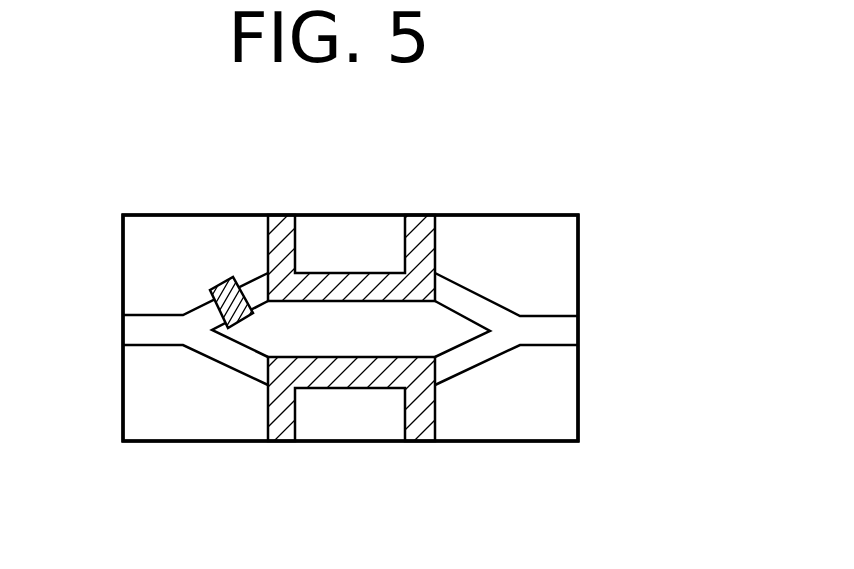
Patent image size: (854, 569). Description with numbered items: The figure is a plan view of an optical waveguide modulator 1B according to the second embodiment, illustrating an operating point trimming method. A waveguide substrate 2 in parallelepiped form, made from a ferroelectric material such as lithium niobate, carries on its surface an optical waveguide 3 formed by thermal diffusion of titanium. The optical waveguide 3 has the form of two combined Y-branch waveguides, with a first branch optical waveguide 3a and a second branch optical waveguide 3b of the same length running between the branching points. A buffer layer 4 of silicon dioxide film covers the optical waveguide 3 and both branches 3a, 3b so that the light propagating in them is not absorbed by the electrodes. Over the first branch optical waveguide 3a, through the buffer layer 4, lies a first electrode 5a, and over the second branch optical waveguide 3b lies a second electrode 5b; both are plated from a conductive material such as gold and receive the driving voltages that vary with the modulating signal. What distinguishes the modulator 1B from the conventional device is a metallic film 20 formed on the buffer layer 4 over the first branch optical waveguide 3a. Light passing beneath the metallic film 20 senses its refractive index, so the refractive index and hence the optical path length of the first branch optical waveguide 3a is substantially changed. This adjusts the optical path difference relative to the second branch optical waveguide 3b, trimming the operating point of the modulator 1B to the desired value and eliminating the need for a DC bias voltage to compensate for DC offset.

The optical waveguide modulator 1B is at (397, 196).
The waveguide substrate 2 is at (548, 443).
The optical waveguide 3 is at (344, 326).
The first branch optical waveguide 3a is at (195, 305).
The second branch optical waveguide 3b is at (228, 372).
The buffer layer 4 is at (178, 403).
The first electrode 5a is at (335, 272).
The second electrode 5b is at (350, 388).
The metallic film 20 is at (227, 279).